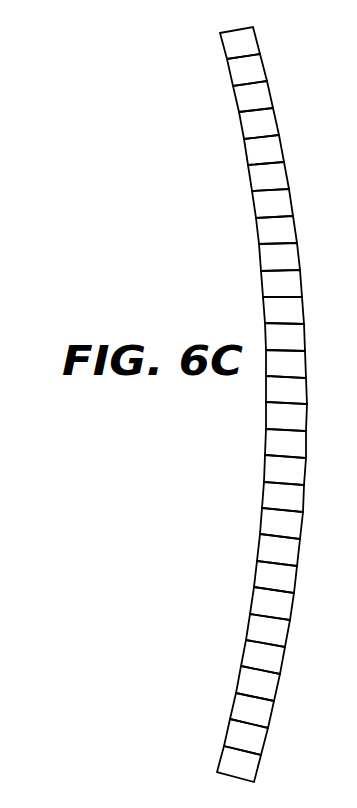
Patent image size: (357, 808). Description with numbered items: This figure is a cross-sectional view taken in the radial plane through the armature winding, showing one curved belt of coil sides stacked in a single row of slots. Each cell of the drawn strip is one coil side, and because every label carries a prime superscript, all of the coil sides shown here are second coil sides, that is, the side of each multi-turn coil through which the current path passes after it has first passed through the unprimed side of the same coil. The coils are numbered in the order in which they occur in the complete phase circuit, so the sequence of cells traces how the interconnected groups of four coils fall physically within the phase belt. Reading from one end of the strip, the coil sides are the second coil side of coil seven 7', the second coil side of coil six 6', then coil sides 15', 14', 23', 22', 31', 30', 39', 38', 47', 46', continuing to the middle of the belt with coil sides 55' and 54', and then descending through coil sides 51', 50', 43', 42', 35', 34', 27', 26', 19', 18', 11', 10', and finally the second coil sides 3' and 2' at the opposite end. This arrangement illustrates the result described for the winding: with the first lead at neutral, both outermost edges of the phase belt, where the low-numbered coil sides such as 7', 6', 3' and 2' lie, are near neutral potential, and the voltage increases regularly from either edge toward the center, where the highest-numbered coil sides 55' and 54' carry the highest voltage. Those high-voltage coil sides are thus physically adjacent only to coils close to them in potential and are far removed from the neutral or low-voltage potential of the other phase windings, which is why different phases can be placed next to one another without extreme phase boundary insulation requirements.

The second coil side of coil seven 7' is at (240, 43).
The second coil side of coil six 6' is at (247, 70).
The second coil side of coil fifteen 15' is at (253, 96).
The second coil side of coil fourteen 14' is at (259, 123).
The second coil side of coil twenty-three 23' is at (264, 150).
The second coil side of coil twenty-two 22' is at (268, 176).
The second coil side of coil thirty-one 31' is at (272, 203).
The second coil side of coil thirty 30' is at (276, 230).
The second coil side of coil thirty-nine 39' is at (279, 257).
The second coil side of coil thirty-eight 38' is at (281, 283).
The second coil side of coil forty-seven 47' is at (283, 310).
The second coil side of coil forty-six 46' is at (285, 337).
The second coil side of coil fifty-five 55' is at (286, 364).
The second coil side of coil fifty-four 54' is at (286, 390).
The second coil side of coil fifty-one 51' is at (286, 416).
The second coil side of coil fifty 50' is at (285, 443).
The second coil side of coil forty-three 43' is at (285, 470).
The second coil side of coil forty-two 42' is at (283, 497).
The second coil side of coil thirty-five 35' is at (281, 523).
The second coil side of coil thirty-four 34' is at (278, 550).
The second coil side of coil twenty-seven 27' is at (275, 577).
The second coil side of coil twenty-six 26' is at (272, 603).
The second coil side of coil nineteen 19' is at (268, 630).
The second coil side of coil eighteen 18' is at (263, 657).
The second coil side of coil eleven 11' is at (258, 683).
The second coil side of coil ten 10' is at (252, 710).
The second coil side of coil three 3' is at (246, 737).
The second coil side of coil two 2' is at (239, 764).